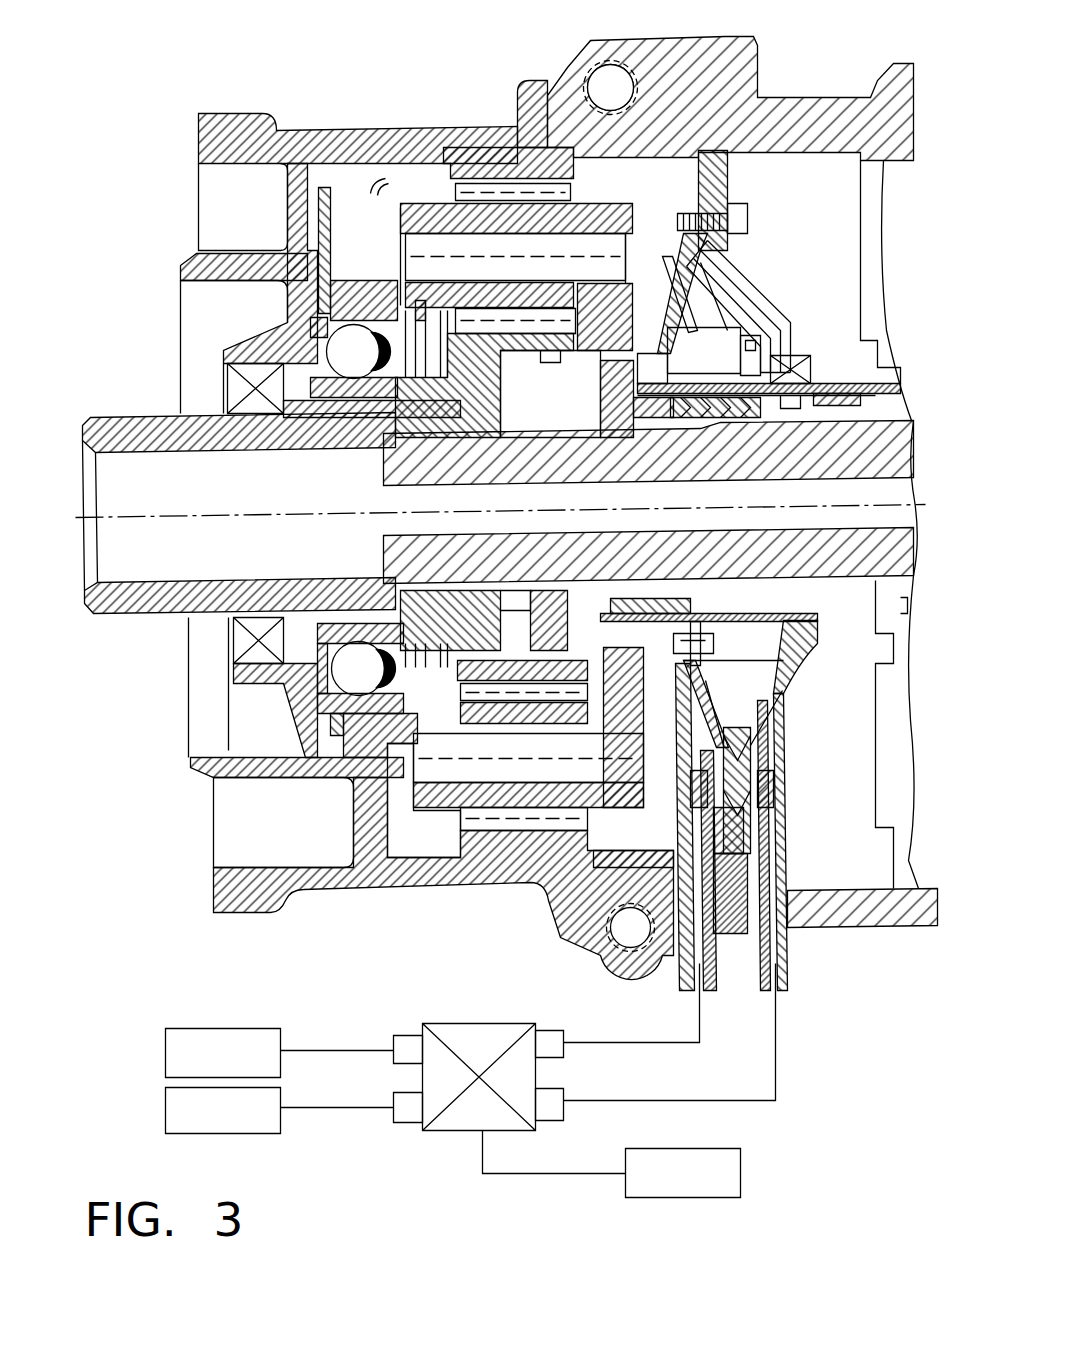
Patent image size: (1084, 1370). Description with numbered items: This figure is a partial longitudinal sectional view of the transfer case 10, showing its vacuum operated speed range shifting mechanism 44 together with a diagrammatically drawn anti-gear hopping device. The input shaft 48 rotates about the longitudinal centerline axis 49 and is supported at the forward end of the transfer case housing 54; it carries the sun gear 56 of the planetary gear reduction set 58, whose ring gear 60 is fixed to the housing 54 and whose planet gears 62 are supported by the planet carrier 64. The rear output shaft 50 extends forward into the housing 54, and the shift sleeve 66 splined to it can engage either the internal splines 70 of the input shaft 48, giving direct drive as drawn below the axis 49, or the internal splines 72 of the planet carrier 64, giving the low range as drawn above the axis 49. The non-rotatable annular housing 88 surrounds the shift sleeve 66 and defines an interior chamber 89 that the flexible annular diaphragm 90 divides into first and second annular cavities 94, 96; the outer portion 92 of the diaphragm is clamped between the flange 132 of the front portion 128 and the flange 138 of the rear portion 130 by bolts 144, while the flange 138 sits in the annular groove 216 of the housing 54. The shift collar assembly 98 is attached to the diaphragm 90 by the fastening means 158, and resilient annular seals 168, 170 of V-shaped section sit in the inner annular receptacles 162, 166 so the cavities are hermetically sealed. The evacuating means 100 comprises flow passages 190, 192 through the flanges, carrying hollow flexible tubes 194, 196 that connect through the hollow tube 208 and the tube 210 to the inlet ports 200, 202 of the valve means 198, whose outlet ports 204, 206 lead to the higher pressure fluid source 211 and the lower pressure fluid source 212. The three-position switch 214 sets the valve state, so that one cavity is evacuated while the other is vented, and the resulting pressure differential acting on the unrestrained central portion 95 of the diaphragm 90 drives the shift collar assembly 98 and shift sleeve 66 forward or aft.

The transfer case 10 is at (378, 76).
The vacuum operated speed range shifting mechanism 44 is at (835, 155).
The input shaft 48 is at (163, 417).
The longitudinal centerline axis 49 is at (220, 500).
The rear output shaft 50 is at (435, 480).
The transfer case housing 54 is at (246, 112).
The sun gear 56 is at (480, 382).
The planetary gear reduction set 58 is at (430, 130).
The ring gear 60 is at (533, 150).
The planet gears 62 is at (553, 190).
The planet carrier 64 is at (620, 207).
The shift sleeve 66 is at (605, 395).
The internal splines 70 is at (552, 373).
The internal splines 72 is at (625, 650).
The annular housing 88 is at (742, 258).
The interior chamber 89 is at (687, 333).
The flexible annular diaphragm 90 is at (768, 322).
The outer portion of diaphragm 92 is at (735, 257).
The first annular cavity 94 is at (716, 374).
The unrestrained central portion of diaphragm 95 is at (708, 265).
The second annular cavity 96 is at (760, 292).
The shift collar assembly 98 is at (812, 400).
The evacuating means 100 is at (800, 885).
The front portion of annular housing 128 is at (657, 296).
The rear portion of annular housing 130 is at (768, 283).
The radially outward flange 132 is at (660, 747).
The radially outward flange 138 is at (792, 740).
The bolts 144 is at (745, 203).
The fastening means 158 is at (733, 340).
The inner annular receptacle 162 is at (735, 400).
The inner annular receptacle 166 is at (800, 372).
The resilient annular seal 168 is at (695, 440).
The resilient annular seal 170 is at (785, 362).
The flow passage 190 is at (705, 712).
The flow passage 192 is at (785, 707).
The hollow flexible tube 194 is at (677, 822).
The hollow flexible tube 196 is at (790, 820).
The valve means 198 is at (488, 1020).
The inlet port 200 is at (548, 1032).
The inlet port 202 is at (555, 1090).
The outlet port 204 is at (403, 1123).
The outlet port 206 is at (403, 1035).
The hollow tube 208 is at (680, 955).
The tube 210 is at (790, 970).
The higher pressure fluid source 211 is at (167, 1112).
The lower pressure fluid source 212 is at (208, 1028).
The three-position switch 214 is at (742, 1173).
The annular groove 216 is at (737, 170).